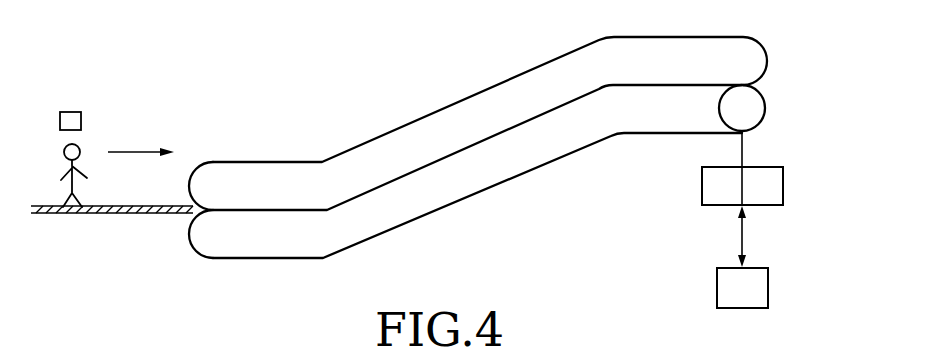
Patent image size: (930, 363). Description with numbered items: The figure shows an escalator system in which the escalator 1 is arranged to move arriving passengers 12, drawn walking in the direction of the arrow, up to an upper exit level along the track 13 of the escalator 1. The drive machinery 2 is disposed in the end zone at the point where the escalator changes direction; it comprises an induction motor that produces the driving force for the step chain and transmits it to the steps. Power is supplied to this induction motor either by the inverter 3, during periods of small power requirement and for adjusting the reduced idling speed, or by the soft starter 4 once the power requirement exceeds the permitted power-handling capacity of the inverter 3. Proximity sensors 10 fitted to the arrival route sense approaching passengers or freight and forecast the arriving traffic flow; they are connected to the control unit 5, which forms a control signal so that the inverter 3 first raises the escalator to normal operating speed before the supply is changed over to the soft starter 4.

The escalator 1 is at (478, 129).
The drive machinery 2 is at (765, 108).
The inverter 3 is at (702, 186).
The soft starter 4 is at (783, 190).
The control unit 5 is at (717, 288).
The proximity sensors 10 is at (70, 112).
The passengers 12 is at (80, 147).
The track 13 is at (428, 165).